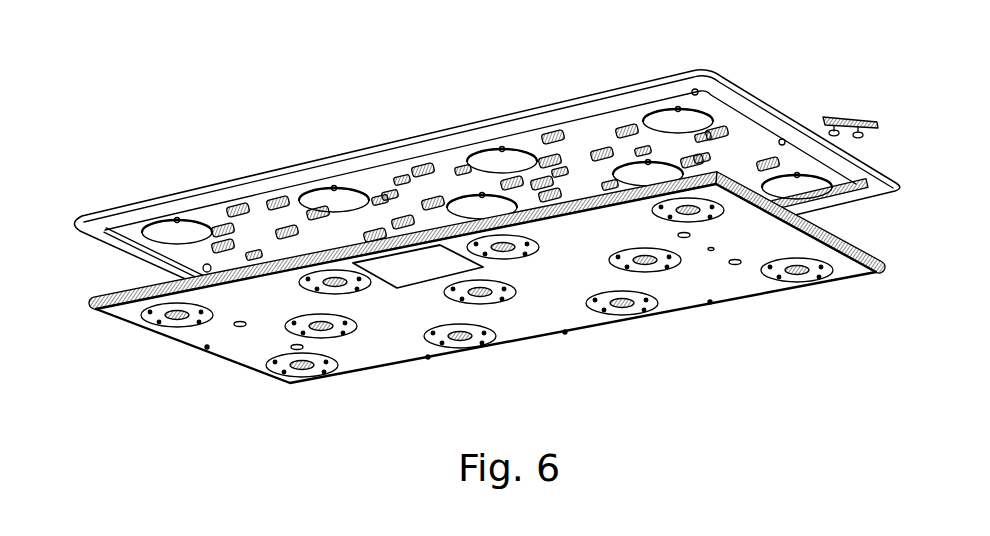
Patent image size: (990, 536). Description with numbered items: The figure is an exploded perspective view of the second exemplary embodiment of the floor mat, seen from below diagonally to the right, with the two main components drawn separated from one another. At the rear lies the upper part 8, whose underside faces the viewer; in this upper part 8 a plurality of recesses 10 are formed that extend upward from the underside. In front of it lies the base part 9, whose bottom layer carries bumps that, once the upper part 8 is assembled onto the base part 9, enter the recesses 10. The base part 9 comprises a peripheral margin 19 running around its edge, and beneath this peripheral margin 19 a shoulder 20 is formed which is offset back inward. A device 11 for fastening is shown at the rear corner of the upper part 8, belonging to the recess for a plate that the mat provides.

The upper part 8 is at (446, 113).
The base part 9 is at (383, 345).
The recesses 10 is at (279, 198).
The device for fastening 11 is at (847, 97).
The peripheral margin 19 is at (118, 295).
The shoulder 20 is at (880, 262).